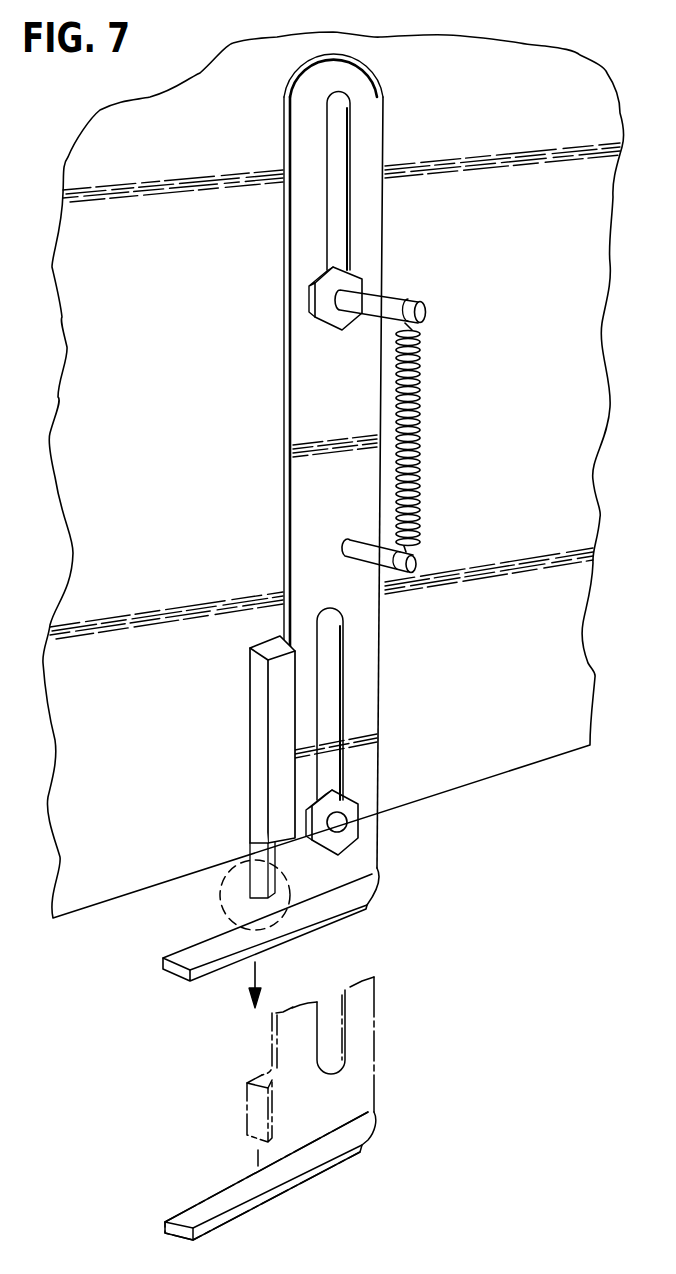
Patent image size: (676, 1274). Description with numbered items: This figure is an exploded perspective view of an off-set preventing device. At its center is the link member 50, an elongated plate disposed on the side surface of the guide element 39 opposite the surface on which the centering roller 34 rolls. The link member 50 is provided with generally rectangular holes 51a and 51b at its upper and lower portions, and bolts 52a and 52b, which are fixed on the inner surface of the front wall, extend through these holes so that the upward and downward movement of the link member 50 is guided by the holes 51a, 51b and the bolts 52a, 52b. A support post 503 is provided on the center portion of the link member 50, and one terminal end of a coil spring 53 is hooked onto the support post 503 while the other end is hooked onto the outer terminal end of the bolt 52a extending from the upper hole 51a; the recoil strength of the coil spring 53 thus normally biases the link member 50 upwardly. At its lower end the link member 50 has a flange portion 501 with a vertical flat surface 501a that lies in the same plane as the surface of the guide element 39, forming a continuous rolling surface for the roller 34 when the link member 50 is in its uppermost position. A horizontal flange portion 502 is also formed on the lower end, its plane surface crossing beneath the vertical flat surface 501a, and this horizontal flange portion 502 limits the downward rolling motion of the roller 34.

The link member 50 is at (283, 460).
The upper rectangular hole 51a is at (352, 197).
The lower rectangular hole 51b is at (332, 705).
The upper bolt 52a is at (318, 305).
The lower bolt 52b is at (347, 826).
The support post 503 is at (426, 312).
The coil spring 53 is at (421, 483).
The guide element 39 is at (254, 717).
The centering roller 34 is at (238, 897).
The flange portion 501 is at (261, 1076).
The vertical flat surface 501a is at (247, 1118).
The horizontal flange portion 502 is at (297, 1183).